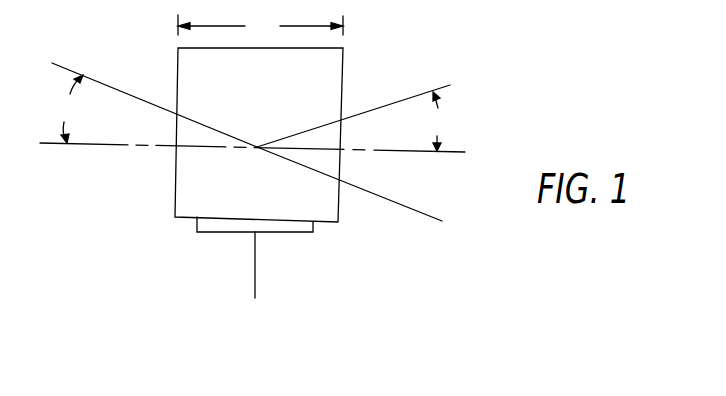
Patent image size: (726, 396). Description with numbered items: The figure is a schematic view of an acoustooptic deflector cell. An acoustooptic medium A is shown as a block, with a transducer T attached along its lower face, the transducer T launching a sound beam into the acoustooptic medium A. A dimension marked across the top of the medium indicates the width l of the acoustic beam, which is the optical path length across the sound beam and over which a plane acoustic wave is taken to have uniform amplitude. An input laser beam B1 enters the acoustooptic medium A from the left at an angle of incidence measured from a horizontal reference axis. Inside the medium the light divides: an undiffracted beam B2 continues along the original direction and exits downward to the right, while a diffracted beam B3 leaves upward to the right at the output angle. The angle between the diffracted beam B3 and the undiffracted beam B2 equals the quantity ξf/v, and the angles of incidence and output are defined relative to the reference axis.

The acoustooptic medium A is at (268, 81).
The width l is at (260, 26).
The transducer T is at (295, 235).
The input laser beam B1 is at (111, 86).
The undiffracted beam B2 is at (397, 207).
The diffracted beam B3 is at (413, 93).